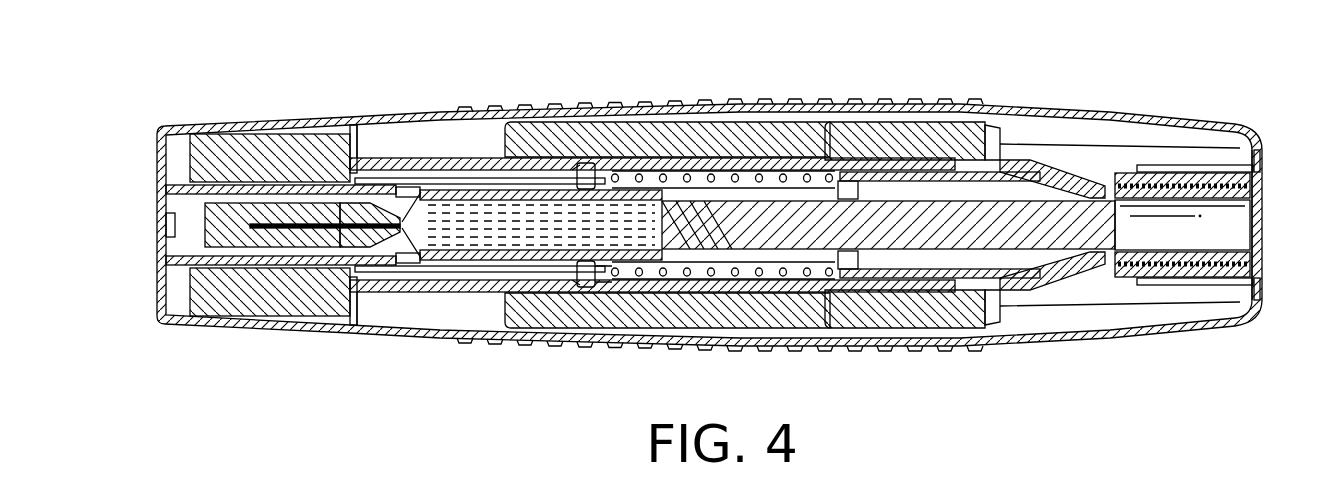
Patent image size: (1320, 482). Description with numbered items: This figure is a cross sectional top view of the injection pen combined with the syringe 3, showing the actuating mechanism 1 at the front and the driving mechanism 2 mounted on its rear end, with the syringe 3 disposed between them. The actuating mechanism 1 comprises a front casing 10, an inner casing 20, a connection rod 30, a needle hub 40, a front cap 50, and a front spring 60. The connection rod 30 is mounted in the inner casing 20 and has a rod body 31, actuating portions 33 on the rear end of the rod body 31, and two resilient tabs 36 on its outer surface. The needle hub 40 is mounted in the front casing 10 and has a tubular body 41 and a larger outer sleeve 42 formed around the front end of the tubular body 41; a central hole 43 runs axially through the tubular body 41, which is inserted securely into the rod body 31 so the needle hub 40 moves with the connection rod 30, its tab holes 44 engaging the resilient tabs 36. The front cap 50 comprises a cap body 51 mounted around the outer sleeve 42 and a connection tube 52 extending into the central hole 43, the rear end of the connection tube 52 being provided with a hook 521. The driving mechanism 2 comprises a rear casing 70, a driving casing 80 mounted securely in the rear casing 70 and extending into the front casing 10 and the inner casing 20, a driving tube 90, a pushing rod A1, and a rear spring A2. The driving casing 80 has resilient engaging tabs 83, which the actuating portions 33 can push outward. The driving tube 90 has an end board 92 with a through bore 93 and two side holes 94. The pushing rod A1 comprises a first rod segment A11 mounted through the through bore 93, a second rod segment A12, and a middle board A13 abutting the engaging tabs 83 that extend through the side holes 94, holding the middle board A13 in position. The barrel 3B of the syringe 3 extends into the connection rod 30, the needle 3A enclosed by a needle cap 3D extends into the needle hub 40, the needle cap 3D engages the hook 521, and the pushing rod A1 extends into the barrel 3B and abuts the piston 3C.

The actuating mechanism 1 is at (401, 83).
The driving mechanism 2 is at (1108, 77).
The syringe 3 is at (470, 182).
The needle 3A is at (298, 230).
The barrel 3B is at (498, 192).
The piston 3C is at (697, 233).
The needle cap 3D is at (255, 212).
The front casing 10 is at (710, 93).
The inner casing 20 is at (620, 125).
The connection rod 30 is at (387, 302).
The rod body 31 is at (443, 286).
The actuating portions 33 is at (958, 165).
The resilient tabs 36 is at (594, 262).
The needle hub 40 is at (270, 130).
The tubular body 41 is at (463, 268).
The outer sleeve 42 is at (312, 150).
The central hole 43 is at (222, 260).
The tab holes 44 is at (585, 268).
The front cap 50 is at (177, 122).
The cap body 51 is at (283, 266).
The connection tube 52 is at (262, 264).
The front spring 60 is at (769, 178).
The rear casing 70 is at (1175, 114).
The driving casing 80 is at (911, 128).
The resilient engaging tabs 83 is at (1057, 180).
The driving tube 90 is at (1003, 266).
The end board 92 is at (842, 258).
The through bore 93 is at (860, 212).
The side holes 94 is at (1099, 170).
The hook 521 is at (405, 192).
The pushing rod A1 is at (1046, 250).
The rear spring A2 is at (1207, 185).
The first rod segment A11 is at (900, 236).
The second rod segment A12 is at (1215, 256).
The middle board A13 is at (1108, 266).